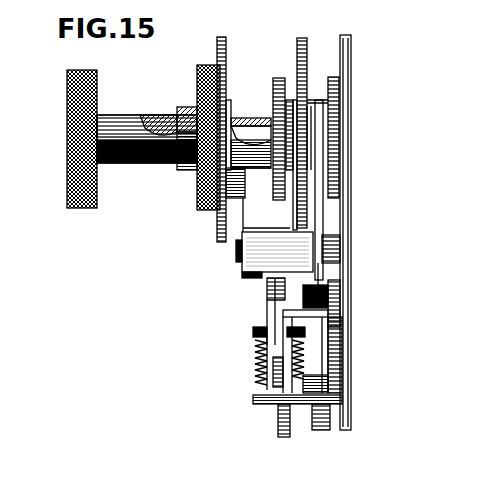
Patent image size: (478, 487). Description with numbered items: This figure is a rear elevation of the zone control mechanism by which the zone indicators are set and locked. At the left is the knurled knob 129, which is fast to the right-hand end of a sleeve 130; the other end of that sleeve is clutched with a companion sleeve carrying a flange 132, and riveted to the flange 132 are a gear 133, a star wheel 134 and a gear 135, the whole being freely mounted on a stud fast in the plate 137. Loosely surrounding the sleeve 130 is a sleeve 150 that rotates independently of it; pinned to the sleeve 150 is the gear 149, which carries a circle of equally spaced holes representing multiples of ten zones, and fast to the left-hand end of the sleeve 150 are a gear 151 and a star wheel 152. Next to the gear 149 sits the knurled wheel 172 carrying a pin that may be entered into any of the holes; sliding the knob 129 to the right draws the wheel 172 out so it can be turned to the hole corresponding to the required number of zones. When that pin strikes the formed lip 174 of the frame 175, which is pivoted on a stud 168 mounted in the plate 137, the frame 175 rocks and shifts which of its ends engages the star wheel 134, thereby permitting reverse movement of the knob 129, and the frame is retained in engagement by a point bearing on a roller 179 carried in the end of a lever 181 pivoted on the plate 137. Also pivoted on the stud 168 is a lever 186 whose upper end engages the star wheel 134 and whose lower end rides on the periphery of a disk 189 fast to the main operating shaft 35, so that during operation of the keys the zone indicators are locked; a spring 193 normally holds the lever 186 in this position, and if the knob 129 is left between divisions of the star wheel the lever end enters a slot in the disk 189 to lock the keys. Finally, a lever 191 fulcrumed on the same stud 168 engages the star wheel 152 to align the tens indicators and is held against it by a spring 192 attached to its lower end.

The knurled knob 129 is at (67, 164).
The sleeve 130 is at (124, 165).
The knurled wheel 172 is at (197, 207).
The gear 149 is at (217, 47).
The sleeve 150 is at (240, 116).
The formed lip 174 is at (248, 192).
The gear 151 is at (280, 73).
The star wheel 152 is at (289, 100).
The flange 132 is at (296, 100).
The gear 133 is at (305, 37).
The star wheel 134 is at (312, 110).
The gear 135 is at (336, 78).
The plate 137 is at (350, 35).
The lever 186 is at (322, 222).
The stud 168 is at (237, 255).
The frame 175 is at (250, 265).
The lever 191 is at (268, 292).
The roller 179 is at (322, 290).
The lever 181 is at (330, 312).
The spring 192 is at (255, 350).
The spring 193 is at (298, 352).
The main operating shaft 35 is at (333, 383).
The disk 189 is at (272, 415).